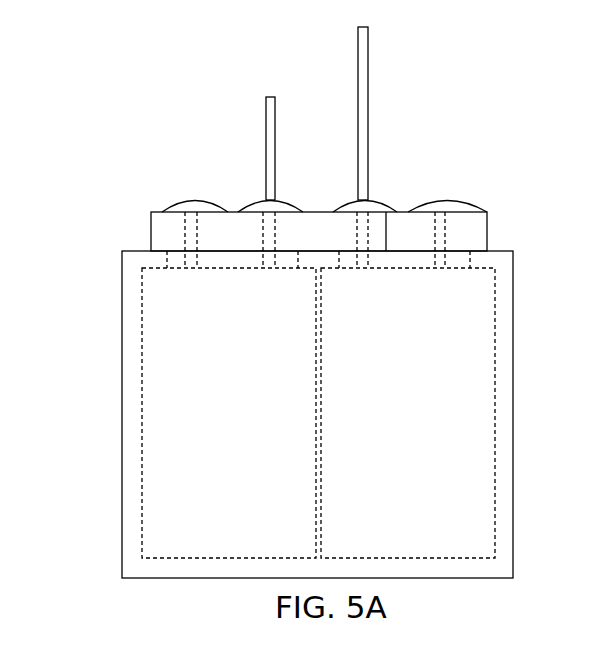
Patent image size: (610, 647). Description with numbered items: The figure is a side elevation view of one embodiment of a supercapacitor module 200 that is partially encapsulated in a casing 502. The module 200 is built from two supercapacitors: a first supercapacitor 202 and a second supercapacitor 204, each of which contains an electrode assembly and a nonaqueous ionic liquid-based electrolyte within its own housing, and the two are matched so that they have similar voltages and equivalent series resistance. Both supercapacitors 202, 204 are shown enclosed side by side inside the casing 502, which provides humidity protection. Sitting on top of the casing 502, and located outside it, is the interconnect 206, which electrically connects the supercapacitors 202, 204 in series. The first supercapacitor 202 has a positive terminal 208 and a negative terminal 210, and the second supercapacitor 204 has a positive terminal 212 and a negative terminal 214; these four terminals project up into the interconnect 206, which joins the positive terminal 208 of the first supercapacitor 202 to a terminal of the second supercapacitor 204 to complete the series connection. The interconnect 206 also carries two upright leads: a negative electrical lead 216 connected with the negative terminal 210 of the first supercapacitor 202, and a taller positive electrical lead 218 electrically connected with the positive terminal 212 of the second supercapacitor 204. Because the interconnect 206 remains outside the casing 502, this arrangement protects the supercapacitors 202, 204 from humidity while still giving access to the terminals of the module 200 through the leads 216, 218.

The supercapacitor module 200 is at (161, 51).
The first supercapacitor 202 is at (142, 387).
The second supercapacitor 204 is at (495, 391).
The interconnect 206 is at (487, 229).
The positive terminal 208 is at (163, 210).
The negative terminal 210 is at (250, 205).
The positive terminal 212 is at (380, 203).
The negative terminal 214 is at (447, 204).
The negative electrical lead 216 is at (267, 126).
The positive electrical lead 218 is at (368, 73).
The casing 502 is at (120, 323).